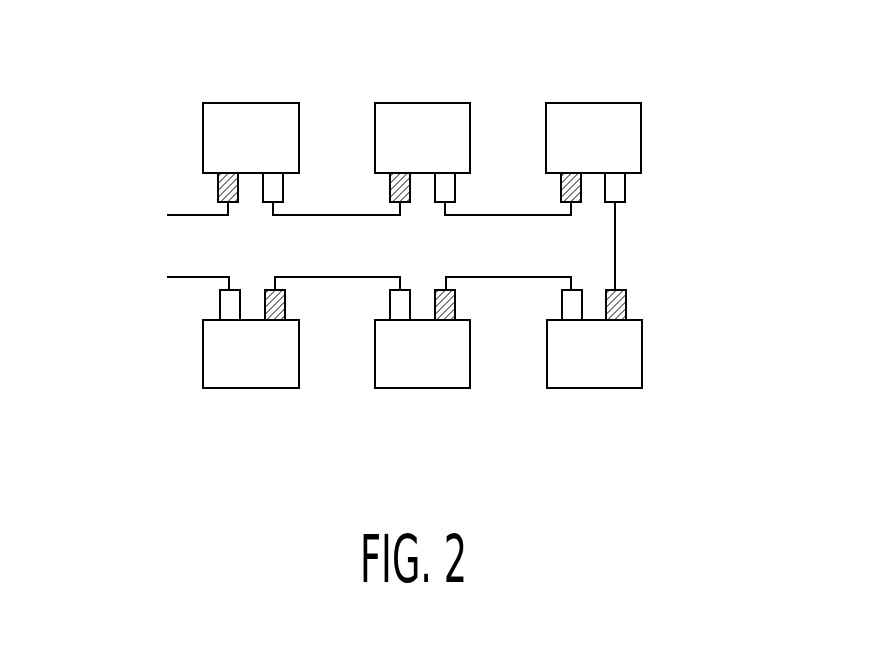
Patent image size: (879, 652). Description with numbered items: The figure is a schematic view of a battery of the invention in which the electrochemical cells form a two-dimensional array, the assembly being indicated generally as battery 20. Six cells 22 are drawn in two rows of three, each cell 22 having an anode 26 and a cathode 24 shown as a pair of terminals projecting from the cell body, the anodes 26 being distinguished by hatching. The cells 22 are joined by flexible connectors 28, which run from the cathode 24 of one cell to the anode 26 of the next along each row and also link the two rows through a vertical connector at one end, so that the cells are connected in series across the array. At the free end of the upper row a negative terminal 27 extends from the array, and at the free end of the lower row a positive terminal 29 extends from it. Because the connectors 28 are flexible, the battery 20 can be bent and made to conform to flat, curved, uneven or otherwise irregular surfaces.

The battery module assembly 20 is at (703, 369).
The cells 22 is at (590, 103).
The cathodes 24 is at (284, 187).
The anodes 26 is at (218, 190).
The negative terminal 27 is at (172, 214).
The flexible connectors 28 is at (500, 216).
The positive terminal 29 is at (172, 278).